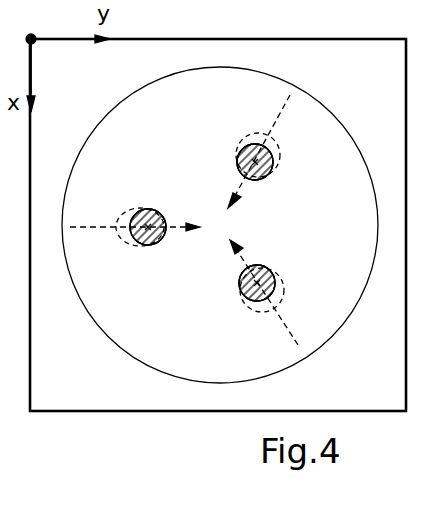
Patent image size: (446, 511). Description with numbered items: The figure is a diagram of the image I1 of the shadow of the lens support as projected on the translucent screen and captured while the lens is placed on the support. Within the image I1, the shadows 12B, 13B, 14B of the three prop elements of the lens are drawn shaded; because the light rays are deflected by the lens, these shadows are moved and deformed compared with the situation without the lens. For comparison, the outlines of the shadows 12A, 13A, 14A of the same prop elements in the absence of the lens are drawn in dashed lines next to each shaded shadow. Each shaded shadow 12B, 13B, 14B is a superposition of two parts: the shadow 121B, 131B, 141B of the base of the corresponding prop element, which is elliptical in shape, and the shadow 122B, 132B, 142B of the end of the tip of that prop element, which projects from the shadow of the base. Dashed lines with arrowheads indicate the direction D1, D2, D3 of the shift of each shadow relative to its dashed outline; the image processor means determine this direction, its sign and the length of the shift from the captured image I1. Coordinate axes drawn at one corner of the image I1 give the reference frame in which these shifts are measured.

The image I1 is at (70, 402).
The direction of the shift D1 is at (300, 337).
The direction of the shift D2 is at (300, 117).
The direction of the shift D3 is at (80, 227).
The shadow of the prop element in the absence of the lens 12A is at (278, 307).
The shadow of the prop element 12B is at (272, 260).
The shadow of the base 121B is at (240, 283).
The shadow of the end of the tip 122B is at (247, 265).
The shadow of the prop element in the absence of the lens 13A is at (272, 133).
The shadow of the prop element 13B is at (258, 182).
The shadow of the base 131B is at (240, 147).
The shadow of the end of the tip 132B is at (238, 178).
The shadow of the prop element in the absence of the lens 14A is at (118, 232).
The shadow of the prop element 14B is at (167, 241).
The shadow of the base 141B is at (143, 210).
The shadow of the end of the tip 142B is at (183, 203).